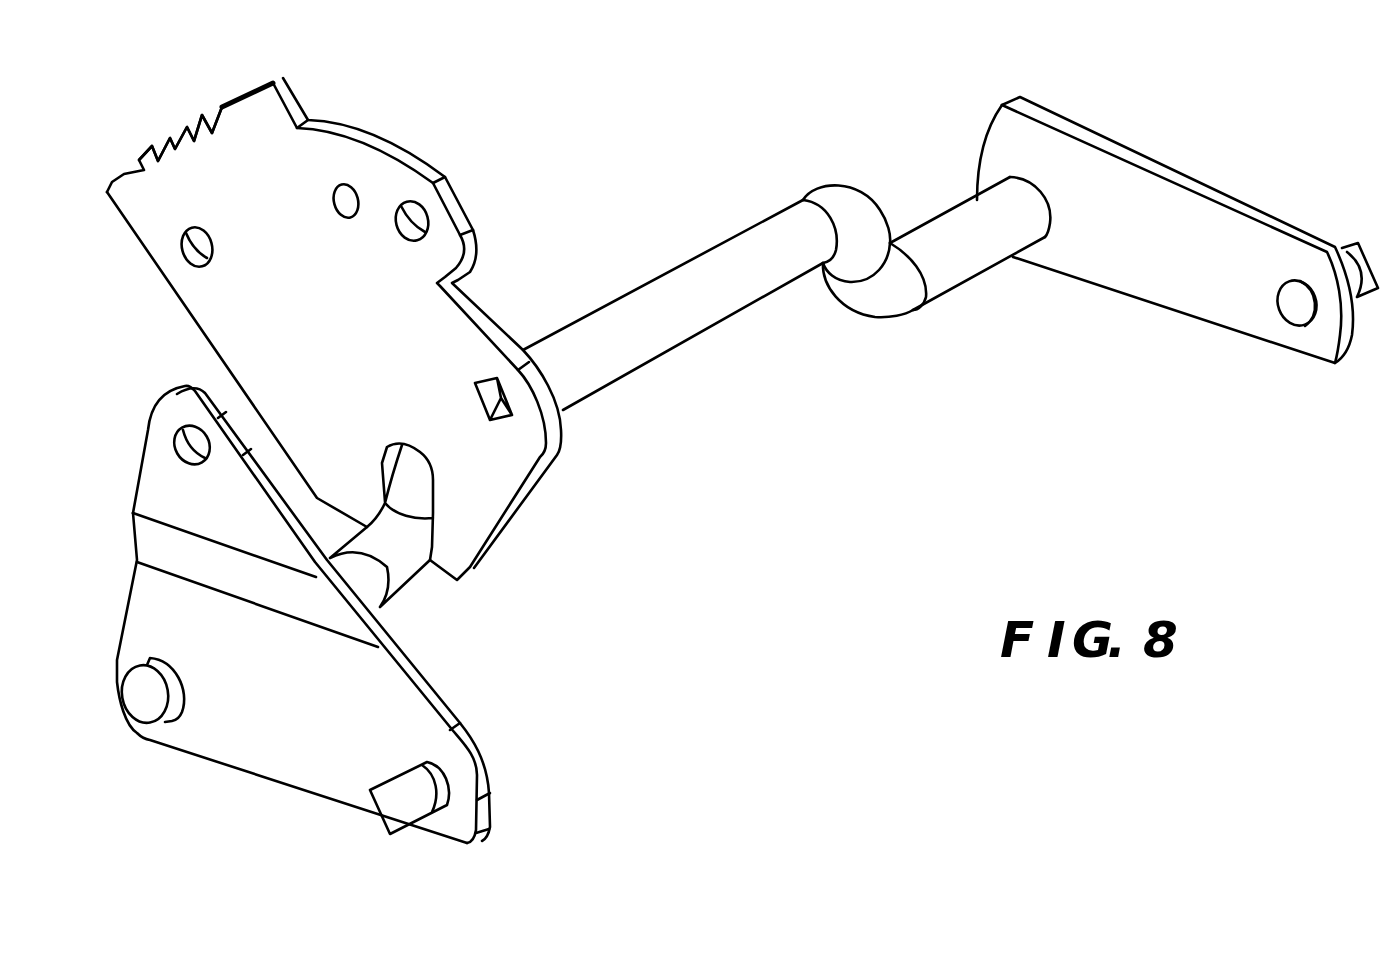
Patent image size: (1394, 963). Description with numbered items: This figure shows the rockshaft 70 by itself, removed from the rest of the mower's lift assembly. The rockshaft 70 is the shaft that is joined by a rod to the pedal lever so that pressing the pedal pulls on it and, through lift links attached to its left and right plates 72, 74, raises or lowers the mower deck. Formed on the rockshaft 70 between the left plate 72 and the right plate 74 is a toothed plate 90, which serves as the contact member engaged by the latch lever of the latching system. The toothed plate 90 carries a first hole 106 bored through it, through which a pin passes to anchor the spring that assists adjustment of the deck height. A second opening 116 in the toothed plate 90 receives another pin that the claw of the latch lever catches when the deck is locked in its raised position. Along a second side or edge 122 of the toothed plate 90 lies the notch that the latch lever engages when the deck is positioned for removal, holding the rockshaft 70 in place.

The rockshaft 70 is at (742, 237).
The left plate 72 is at (283, 773).
The right plate 74 is at (1188, 202).
The toothed plate 90 is at (325, 142).
The first hole 106 is at (487, 380).
The second opening 116 is at (355, 195).
The second side or edge 122 is at (223, 103).